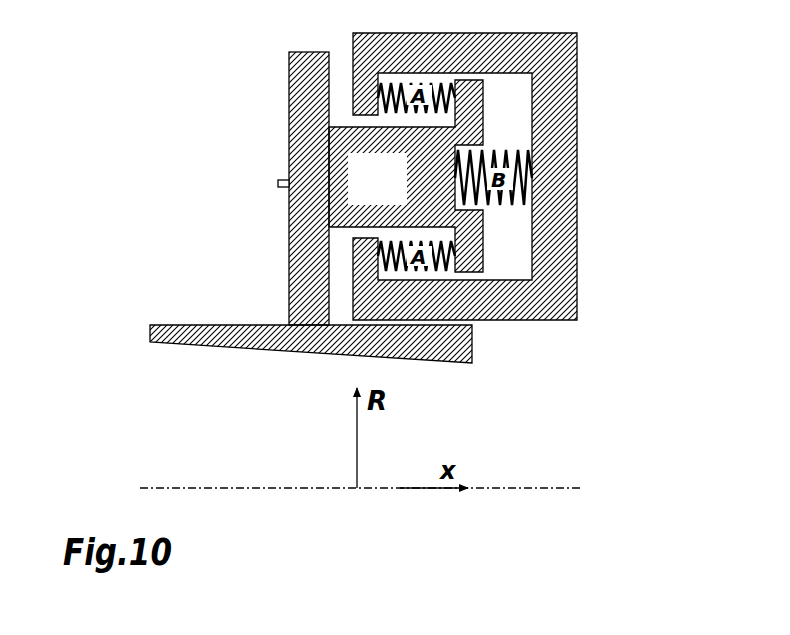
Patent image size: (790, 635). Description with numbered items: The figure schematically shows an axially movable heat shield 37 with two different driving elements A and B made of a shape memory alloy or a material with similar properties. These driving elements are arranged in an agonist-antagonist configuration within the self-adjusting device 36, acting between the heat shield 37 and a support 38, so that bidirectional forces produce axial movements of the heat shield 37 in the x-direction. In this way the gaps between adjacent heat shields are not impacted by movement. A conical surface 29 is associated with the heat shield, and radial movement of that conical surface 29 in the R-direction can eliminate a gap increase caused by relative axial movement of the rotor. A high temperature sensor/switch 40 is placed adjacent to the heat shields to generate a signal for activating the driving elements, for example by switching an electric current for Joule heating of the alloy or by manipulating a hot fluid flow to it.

The conical surface 29 is at (272, 348).
The self-adjusting device 36 is at (253, 142).
The heat shield 37 is at (394, 195).
The support 38 is at (560, 113).
The high temperature sensor/switch 40 is at (278, 187).